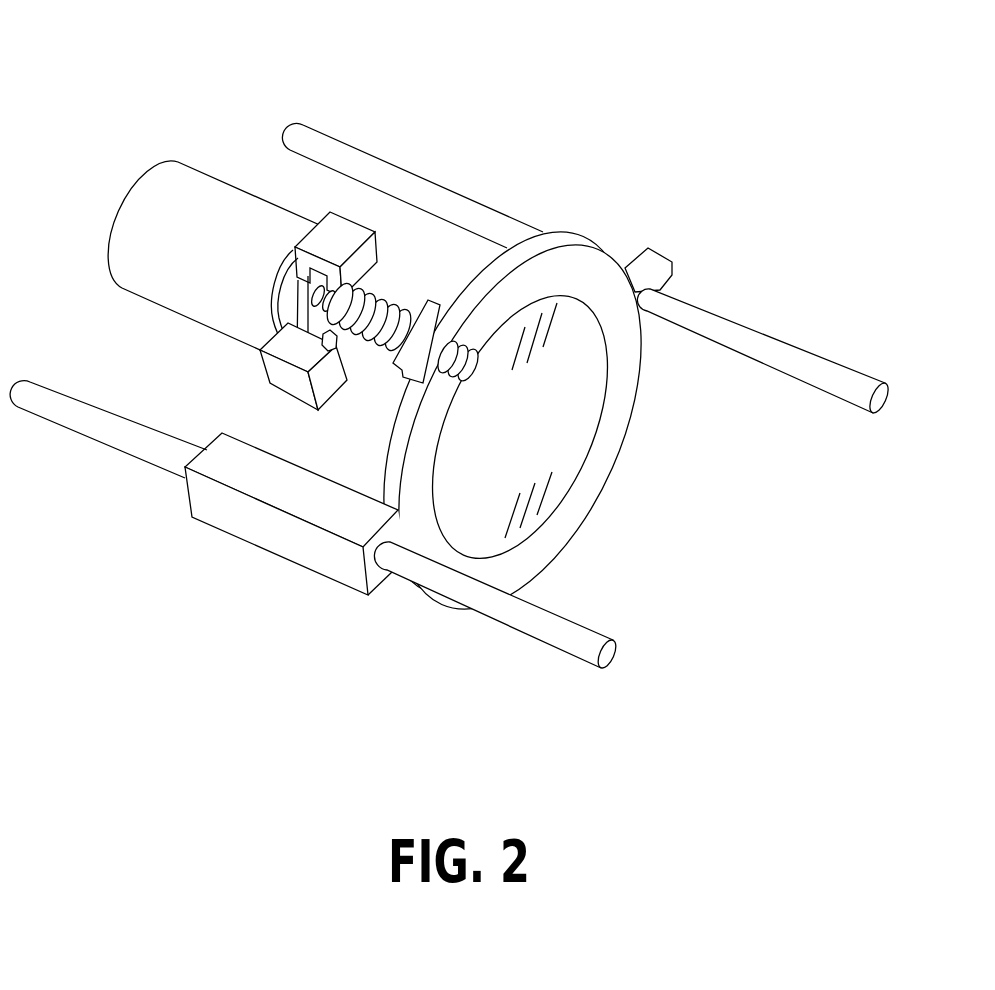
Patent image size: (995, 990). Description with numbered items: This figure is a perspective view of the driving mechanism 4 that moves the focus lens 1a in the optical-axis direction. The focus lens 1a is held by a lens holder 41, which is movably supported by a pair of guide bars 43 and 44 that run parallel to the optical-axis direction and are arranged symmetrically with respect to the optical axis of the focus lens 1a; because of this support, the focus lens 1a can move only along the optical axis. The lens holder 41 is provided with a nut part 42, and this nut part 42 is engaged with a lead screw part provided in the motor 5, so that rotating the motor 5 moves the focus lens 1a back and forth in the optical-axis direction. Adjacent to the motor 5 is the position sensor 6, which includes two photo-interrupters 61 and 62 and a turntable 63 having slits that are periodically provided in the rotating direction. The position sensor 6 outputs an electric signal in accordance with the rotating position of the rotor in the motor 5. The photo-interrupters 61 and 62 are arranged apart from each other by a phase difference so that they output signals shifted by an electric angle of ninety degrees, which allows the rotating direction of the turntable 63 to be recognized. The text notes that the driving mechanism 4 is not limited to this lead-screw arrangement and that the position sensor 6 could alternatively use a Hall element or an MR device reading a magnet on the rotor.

The focus lens 1a is at (563, 453).
The driving mechanism 4 is at (194, 610).
The lens holder 41 is at (595, 262).
The nut part 42 is at (455, 320).
The guide bar 43 is at (713, 318).
The guide bar 44 is at (494, 603).
The motor 5 is at (233, 213).
The position sensor 6 is at (245, 67).
The photo-interrupter 61 is at (278, 342).
The photo-interrupter 62 is at (342, 233).
The turntable 63 is at (385, 284).